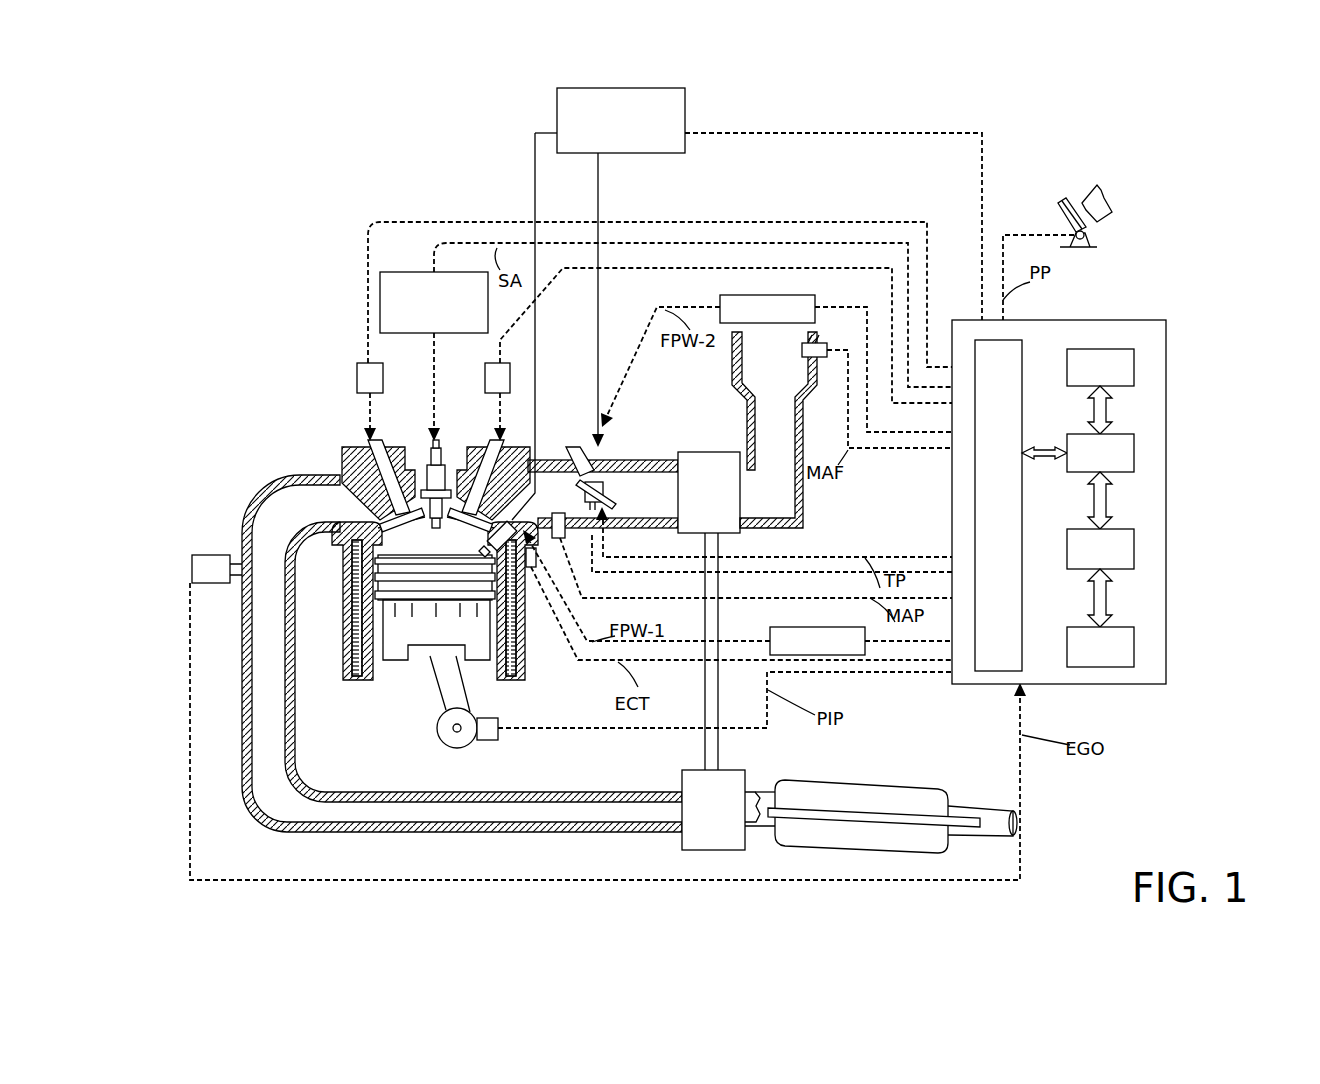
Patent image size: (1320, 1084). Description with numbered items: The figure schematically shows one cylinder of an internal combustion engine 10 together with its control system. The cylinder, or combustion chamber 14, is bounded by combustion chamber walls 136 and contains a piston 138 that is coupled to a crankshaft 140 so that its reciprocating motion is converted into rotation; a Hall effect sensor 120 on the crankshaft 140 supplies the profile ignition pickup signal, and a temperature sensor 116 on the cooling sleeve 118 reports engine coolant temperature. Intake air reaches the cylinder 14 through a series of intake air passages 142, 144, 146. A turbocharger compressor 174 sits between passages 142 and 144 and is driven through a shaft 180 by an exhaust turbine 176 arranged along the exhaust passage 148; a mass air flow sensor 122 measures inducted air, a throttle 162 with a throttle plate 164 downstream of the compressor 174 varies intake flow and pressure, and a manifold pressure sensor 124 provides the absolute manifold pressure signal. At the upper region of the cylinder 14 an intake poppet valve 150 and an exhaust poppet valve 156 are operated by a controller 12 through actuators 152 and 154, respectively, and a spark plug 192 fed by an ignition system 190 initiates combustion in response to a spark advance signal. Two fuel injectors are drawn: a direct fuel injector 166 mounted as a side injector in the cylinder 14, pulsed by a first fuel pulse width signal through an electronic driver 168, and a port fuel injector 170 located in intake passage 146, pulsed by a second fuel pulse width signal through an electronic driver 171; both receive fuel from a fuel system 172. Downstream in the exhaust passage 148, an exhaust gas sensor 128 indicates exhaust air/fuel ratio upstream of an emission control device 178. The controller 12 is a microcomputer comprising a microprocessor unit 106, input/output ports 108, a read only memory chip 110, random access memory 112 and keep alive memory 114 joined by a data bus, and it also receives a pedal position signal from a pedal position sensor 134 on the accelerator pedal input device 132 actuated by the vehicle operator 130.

The internal combustion engine 10 is at (281, 401).
The controller 12 is at (1166, 322).
The cylinder (combustion chamber) 14 is at (340, 565).
The microprocessor unit 106 is at (1134, 456).
The input/output ports 108 is at (1022, 345).
The read only memory chip 110 is at (1134, 368).
The random access memory 112 is at (1134, 552).
The keep alive memory 114 is at (1134, 652).
The temperature sensor 116 is at (531, 568).
The cooling sleeve 118 is at (520, 640).
The Hall effect sensor 120 is at (492, 741).
The mass air flow sensor 122 is at (827, 345).
The manifold pressure sensor 124 is at (562, 545).
The exhaust gas sensor 128 is at (192, 562).
The vehicle operator 130 is at (1112, 207).
The input device (accelerator pedal) 132 is at (1062, 208).
The pedal position sensor 134 is at (1097, 244).
The combustion chamber walls 136 is at (375, 665).
The piston 138 is at (418, 633).
The crankshaft 140 is at (446, 745).
The intake air passage 142 is at (774, 430).
The intake air passage 144 is at (603, 481).
The intake air passage 146 is at (608, 505).
The exhaust passage 148 is at (462, 653).
The intake poppet valve 150 is at (470, 490).
The actuator 152 is at (485, 374).
The actuator 154 is at (357, 370).
The exhaust poppet valve 156 is at (352, 500).
The throttle 162 is at (600, 478).
The throttle plate 164 is at (582, 483).
The fuel injector (direct injector) 166 is at (624, 387).
The electronic driver 168 is at (770, 632).
The fuel injector (port injector) 170 is at (576, 450).
The electronic driver 171 is at (720, 300).
The fuel system 172 is at (685, 92).
The compressor 174 is at (698, 452).
The exhaust turbine 176 is at (682, 845).
The emission control device 178 is at (850, 782).
The shaft 180 is at (718, 745).
The ignition system 190 is at (394, 272).
The spark plug 192 is at (428, 465).